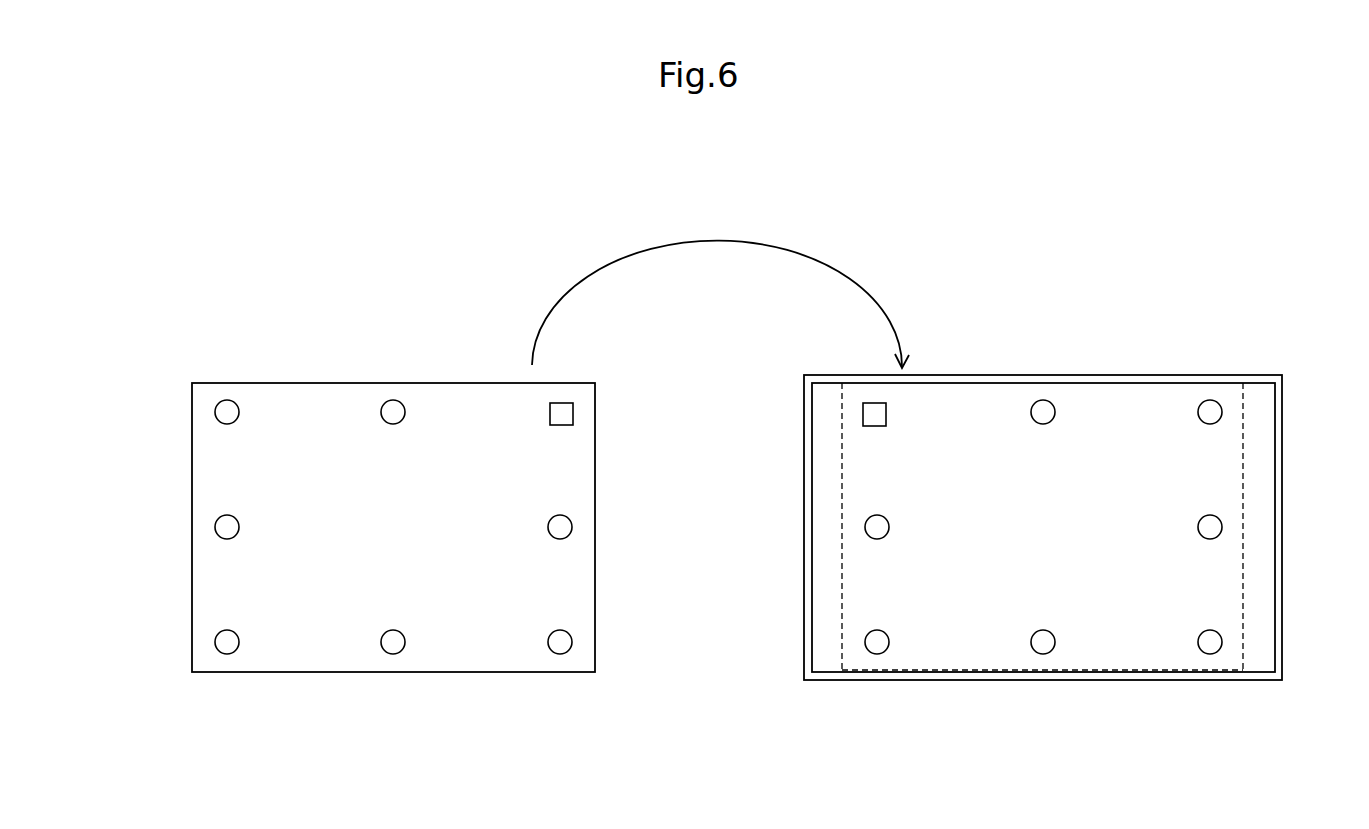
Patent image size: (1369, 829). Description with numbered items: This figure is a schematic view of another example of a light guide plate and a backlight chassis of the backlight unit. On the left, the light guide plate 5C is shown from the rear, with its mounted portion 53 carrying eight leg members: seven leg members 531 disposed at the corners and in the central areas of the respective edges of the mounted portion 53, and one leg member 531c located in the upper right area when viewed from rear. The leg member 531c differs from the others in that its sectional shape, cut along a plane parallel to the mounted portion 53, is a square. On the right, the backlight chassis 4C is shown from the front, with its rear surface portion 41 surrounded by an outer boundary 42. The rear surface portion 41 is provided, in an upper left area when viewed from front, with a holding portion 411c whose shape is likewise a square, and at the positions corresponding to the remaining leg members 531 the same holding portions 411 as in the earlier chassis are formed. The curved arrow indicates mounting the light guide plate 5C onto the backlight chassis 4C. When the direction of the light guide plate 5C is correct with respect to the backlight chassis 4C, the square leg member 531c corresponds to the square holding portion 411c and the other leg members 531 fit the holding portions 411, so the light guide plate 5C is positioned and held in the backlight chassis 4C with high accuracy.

The light guide plate 5C is at (176, 358).
The mounted portion 53 is at (472, 635).
The leg member 531 is at (215, 407).
The leg member 531c is at (565, 410).
The backlight chassis 4C is at (1295, 351).
The rear surface portion 41 is at (1103, 633).
The holding portion 411 is at (1042, 407).
The holding portion 411c is at (863, 410).
The side wall 42 is at (1280, 652).